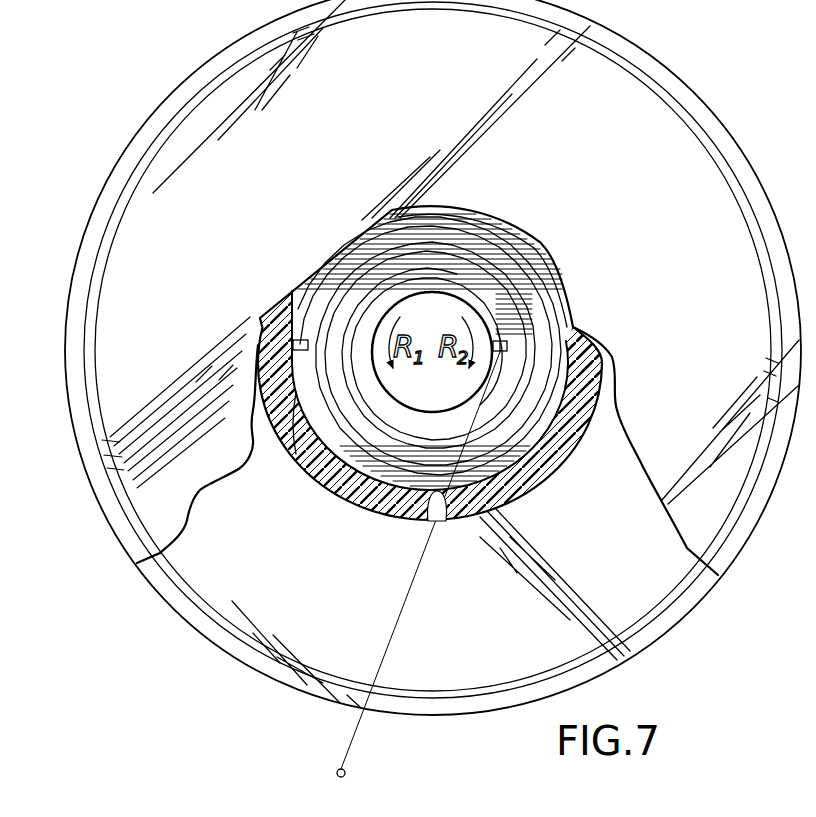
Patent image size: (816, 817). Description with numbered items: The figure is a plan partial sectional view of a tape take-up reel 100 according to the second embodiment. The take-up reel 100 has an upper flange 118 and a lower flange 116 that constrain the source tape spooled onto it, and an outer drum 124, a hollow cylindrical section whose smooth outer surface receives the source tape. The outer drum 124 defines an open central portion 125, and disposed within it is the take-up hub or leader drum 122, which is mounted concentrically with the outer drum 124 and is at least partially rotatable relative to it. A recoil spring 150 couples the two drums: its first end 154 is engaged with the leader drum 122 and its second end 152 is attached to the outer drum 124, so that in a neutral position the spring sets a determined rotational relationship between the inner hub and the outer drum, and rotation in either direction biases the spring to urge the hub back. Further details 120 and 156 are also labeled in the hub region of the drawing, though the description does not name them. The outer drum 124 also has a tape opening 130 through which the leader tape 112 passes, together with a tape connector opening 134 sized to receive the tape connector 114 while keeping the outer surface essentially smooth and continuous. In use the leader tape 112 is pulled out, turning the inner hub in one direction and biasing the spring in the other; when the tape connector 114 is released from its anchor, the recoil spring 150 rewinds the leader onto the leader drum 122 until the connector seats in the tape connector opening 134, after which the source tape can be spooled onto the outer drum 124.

The take-up reel 100 is at (146, 61).
The leader tape 112 is at (390, 640).
The tape connector 114 is at (336, 770).
The lower flange 116 is at (286, 576).
The upper flange 118 is at (626, 198).
The spiral strip 120 is at (458, 293).
The leader drum 122 is at (423, 307).
The outer drum 124 is at (570, 460).
The open central portion 125 is at (290, 403).
The tape opening 130 is at (439, 542).
The tape connector opening 134 is at (437, 498).
The recoil spring 150 is at (344, 430).
The second end 152 is at (287, 392).
The first end 154 is at (497, 354).
The upper ring edge 156 is at (555, 304).